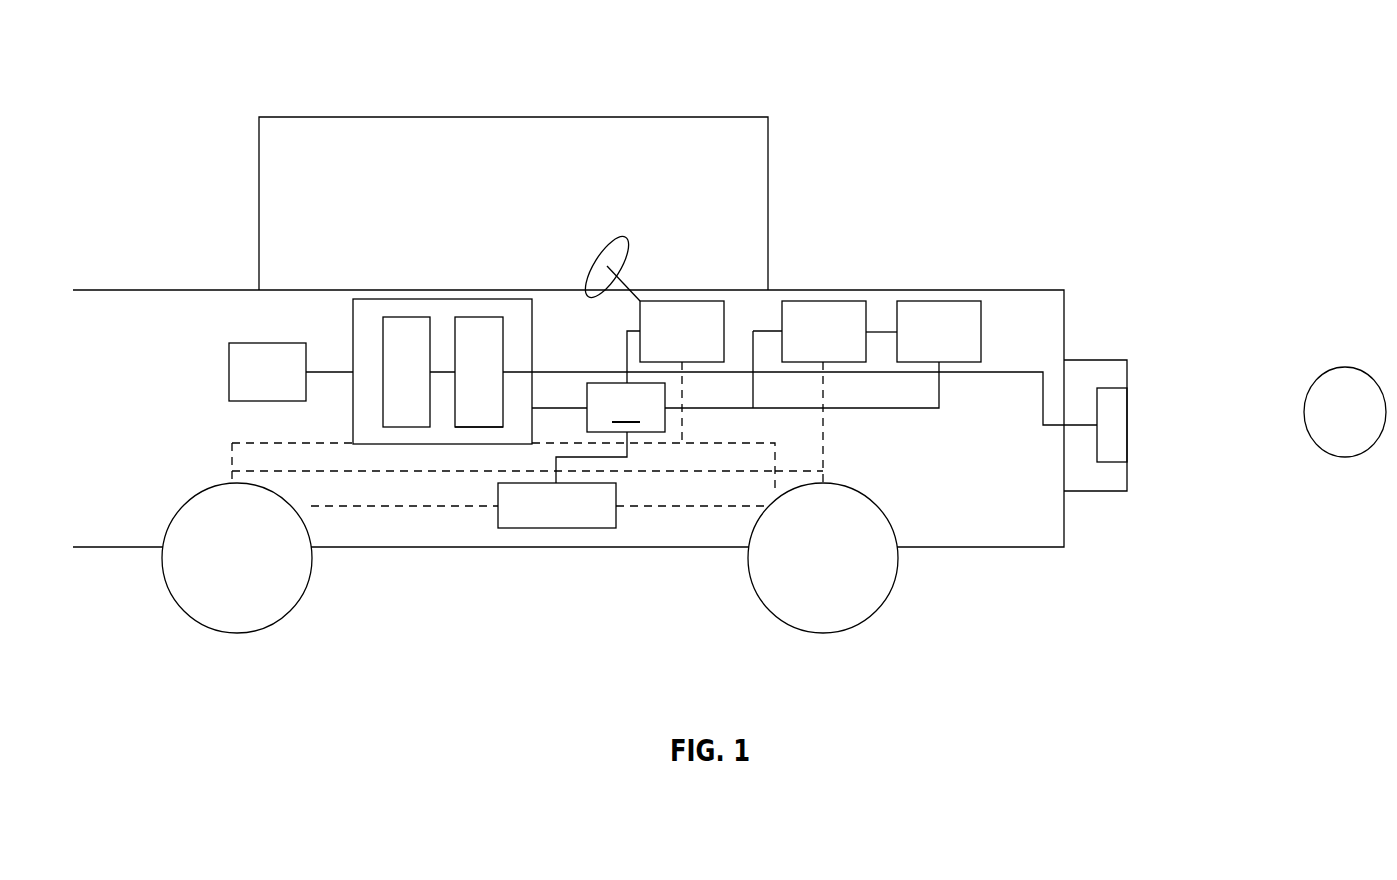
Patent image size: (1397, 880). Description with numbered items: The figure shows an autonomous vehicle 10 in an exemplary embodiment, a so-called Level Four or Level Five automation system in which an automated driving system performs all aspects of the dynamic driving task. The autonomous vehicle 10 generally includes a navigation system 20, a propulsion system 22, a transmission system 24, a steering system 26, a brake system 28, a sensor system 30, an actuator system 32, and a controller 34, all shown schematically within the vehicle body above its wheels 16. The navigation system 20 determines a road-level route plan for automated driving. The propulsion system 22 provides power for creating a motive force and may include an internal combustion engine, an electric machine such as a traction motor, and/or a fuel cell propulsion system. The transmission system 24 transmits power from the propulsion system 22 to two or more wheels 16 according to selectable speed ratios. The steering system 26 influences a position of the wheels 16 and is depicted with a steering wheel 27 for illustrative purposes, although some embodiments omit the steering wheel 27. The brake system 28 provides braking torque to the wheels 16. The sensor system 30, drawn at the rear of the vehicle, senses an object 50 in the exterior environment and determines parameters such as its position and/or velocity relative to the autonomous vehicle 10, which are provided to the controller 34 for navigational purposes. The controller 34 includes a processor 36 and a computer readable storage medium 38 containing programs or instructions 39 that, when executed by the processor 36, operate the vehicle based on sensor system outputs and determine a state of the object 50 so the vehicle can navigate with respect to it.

The autonomous vehicle 10 is at (100, 53).
The wheels 16 is at (237, 633).
The navigation system 20 is at (268, 343).
The propulsion system 22 is at (939, 301).
The transmission system 24 is at (825, 301).
The steering system 26 is at (683, 301).
The steering wheel 27 is at (623, 237).
The brake system 28 is at (557, 529).
The sensor system 30 is at (1110, 463).
The actuator system 32 is at (610, 433).
The controller 34 is at (447, 299).
The processor 36 is at (405, 317).
The computer readable storage medium 38 is at (478, 317).
The programs or instructions 39 is at (478, 428).
The object 50 is at (1345, 367).